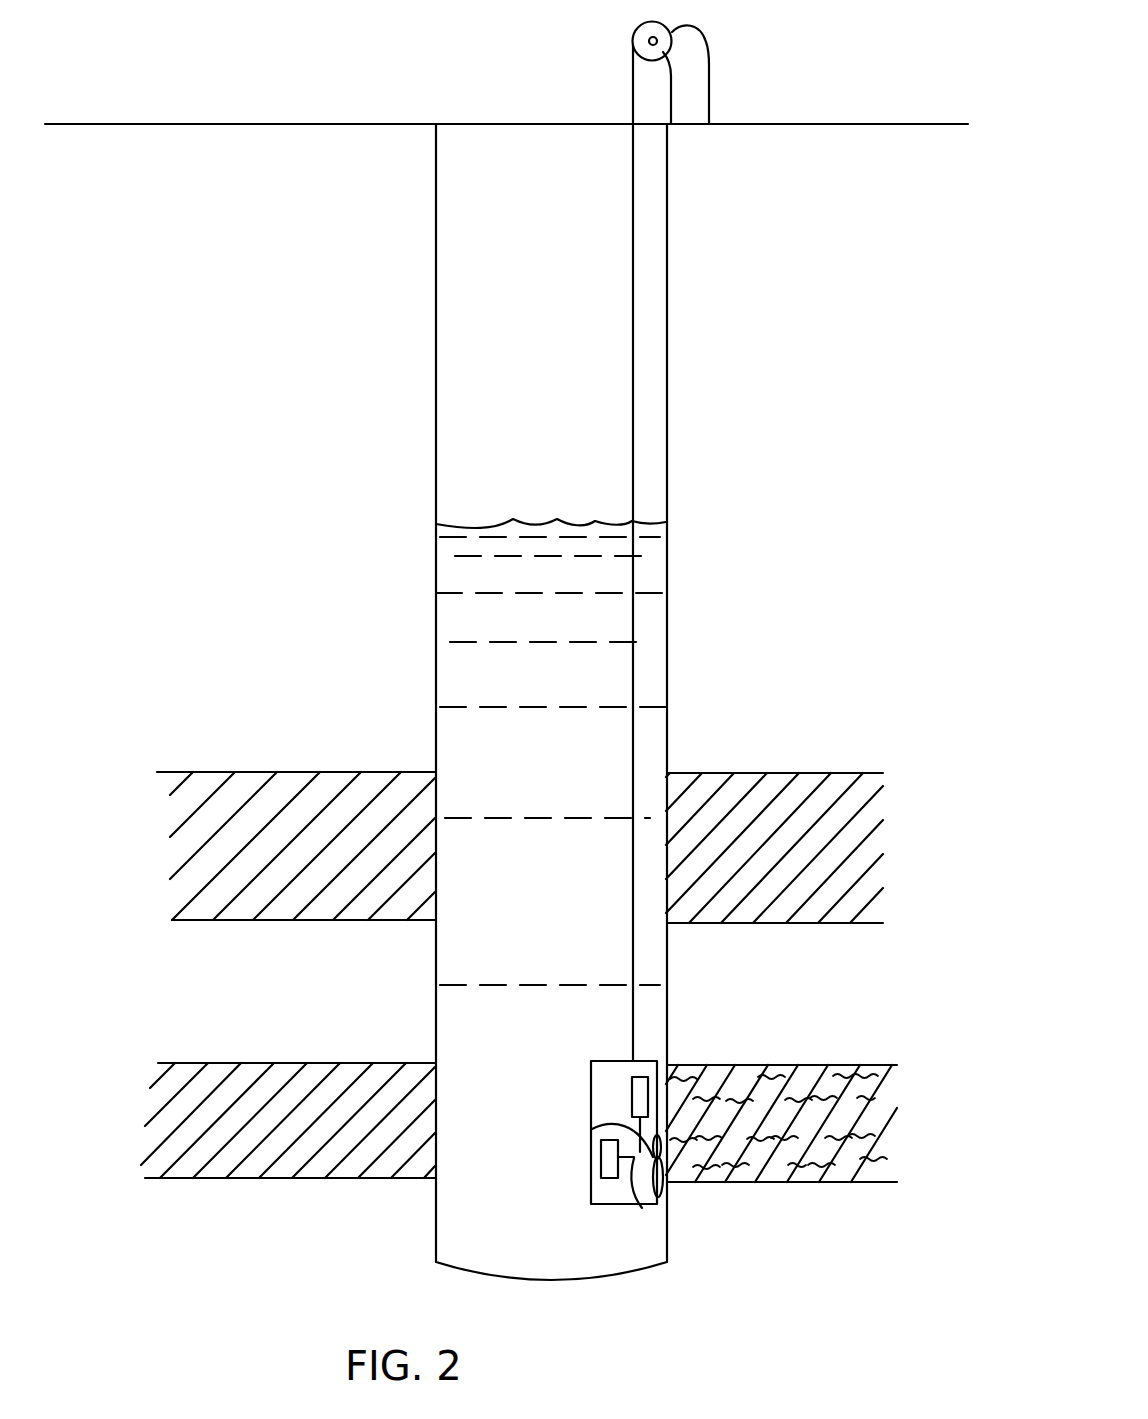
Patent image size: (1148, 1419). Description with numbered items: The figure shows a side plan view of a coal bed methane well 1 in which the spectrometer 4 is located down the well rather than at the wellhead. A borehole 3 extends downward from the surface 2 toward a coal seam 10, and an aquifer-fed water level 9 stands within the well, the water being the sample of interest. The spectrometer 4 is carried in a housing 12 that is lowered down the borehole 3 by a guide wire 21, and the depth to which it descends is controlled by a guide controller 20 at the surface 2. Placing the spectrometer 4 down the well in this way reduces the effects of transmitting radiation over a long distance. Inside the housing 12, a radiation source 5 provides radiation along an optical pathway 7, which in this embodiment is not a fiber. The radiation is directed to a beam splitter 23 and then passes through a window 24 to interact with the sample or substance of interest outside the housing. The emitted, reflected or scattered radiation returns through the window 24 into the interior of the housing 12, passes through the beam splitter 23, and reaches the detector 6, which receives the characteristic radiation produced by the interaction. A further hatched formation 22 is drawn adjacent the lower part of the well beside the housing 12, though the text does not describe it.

The coal bed methane well 1 is at (710, 408).
The surface 2 is at (305, 124).
The borehole 3 is at (520, 85).
The spectrometer 4 is at (610, 1212).
The radiation source 5 is at (600, 1178).
The detector 6 is at (640, 1077).
The optical pathway 7 is at (643, 1201).
The water level 9 is at (458, 522).
The coal seam 10 is at (233, 771).
The housing 12 is at (604, 1124).
The guide controller 20 is at (692, 27).
The guide wire 21 is at (630, 322).
The permeable formation 22 is at (797, 1078).
The beam splitter 23 is at (592, 1128).
The window 24 is at (660, 1197).